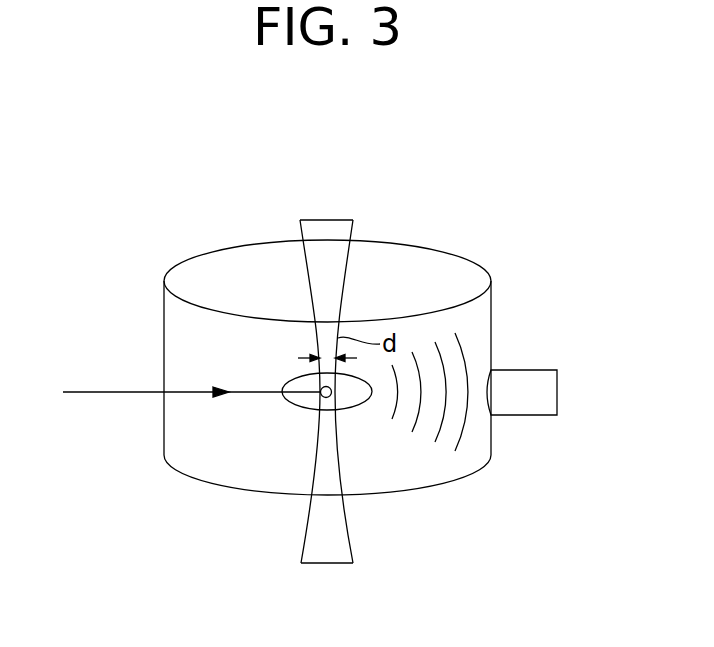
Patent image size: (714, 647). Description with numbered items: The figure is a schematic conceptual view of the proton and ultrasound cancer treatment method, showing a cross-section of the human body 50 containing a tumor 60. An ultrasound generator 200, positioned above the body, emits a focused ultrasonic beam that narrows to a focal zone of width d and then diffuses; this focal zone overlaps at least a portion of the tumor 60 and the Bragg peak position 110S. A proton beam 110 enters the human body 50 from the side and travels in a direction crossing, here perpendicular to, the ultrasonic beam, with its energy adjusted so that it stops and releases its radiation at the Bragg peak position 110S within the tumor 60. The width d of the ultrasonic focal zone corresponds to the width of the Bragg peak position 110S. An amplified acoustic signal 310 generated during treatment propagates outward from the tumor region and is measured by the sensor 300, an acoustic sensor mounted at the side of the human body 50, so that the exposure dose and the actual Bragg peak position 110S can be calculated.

The human body 50 is at (430, 246).
The ultrasound generator 200 is at (325, 219).
The proton beam 110 is at (103, 390).
The Bragg peak position 110S is at (321, 405).
The tumor 60 is at (332, 398).
The amplified acoustic signal 310 is at (462, 352).
The sensor 300 is at (543, 392).